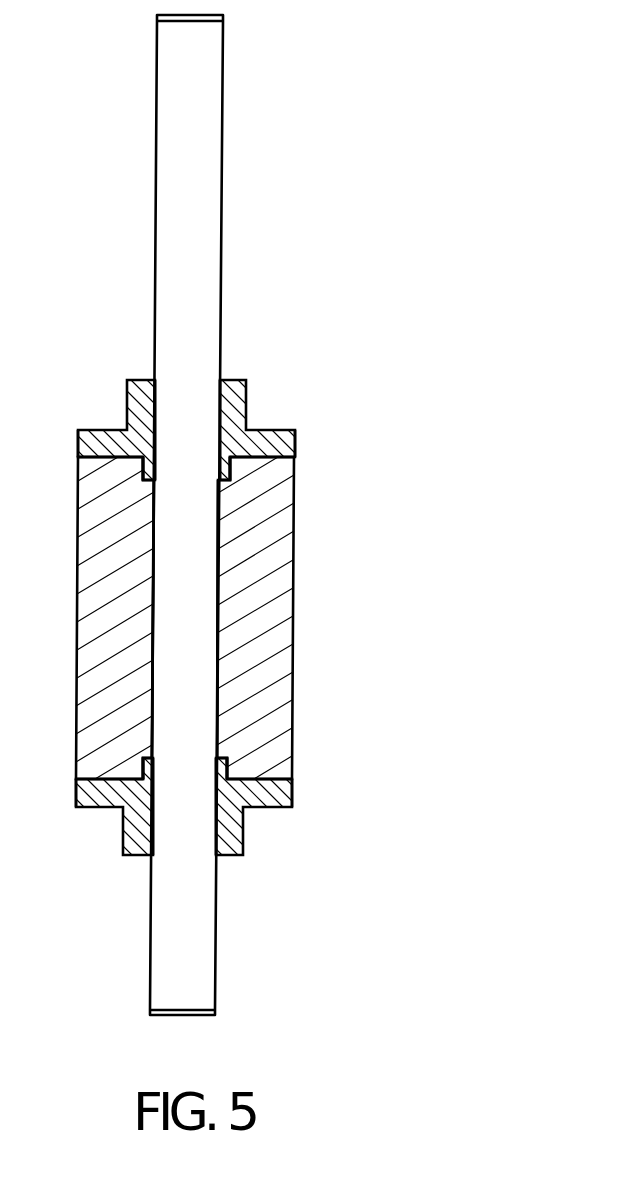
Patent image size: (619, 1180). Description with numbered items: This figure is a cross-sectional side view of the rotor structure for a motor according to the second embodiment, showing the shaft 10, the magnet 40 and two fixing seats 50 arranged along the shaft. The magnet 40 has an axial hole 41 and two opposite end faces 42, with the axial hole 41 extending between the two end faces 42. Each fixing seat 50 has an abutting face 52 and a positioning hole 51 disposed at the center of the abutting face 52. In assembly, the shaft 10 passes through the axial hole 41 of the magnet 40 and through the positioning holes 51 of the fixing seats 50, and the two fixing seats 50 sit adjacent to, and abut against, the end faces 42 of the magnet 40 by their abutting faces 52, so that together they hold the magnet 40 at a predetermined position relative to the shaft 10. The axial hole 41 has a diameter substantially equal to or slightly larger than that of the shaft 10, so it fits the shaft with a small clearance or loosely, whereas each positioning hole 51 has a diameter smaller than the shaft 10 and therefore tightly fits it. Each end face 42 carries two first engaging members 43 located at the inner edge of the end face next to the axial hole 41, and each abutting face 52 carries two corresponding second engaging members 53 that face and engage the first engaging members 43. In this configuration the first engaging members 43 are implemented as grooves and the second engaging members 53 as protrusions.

The shaft 10 is at (200, 272).
The magnet 40 is at (275, 612).
The axial hole 41 is at (218, 612).
The end face 42 is at (258, 458).
The first engaging member 43 is at (237, 462).
The fixing seat 50 is at (233, 402).
The positioning hole 51 is at (232, 403).
The abutting face 52 is at (185, 618).
The second engaging member 53 is at (186, 618).